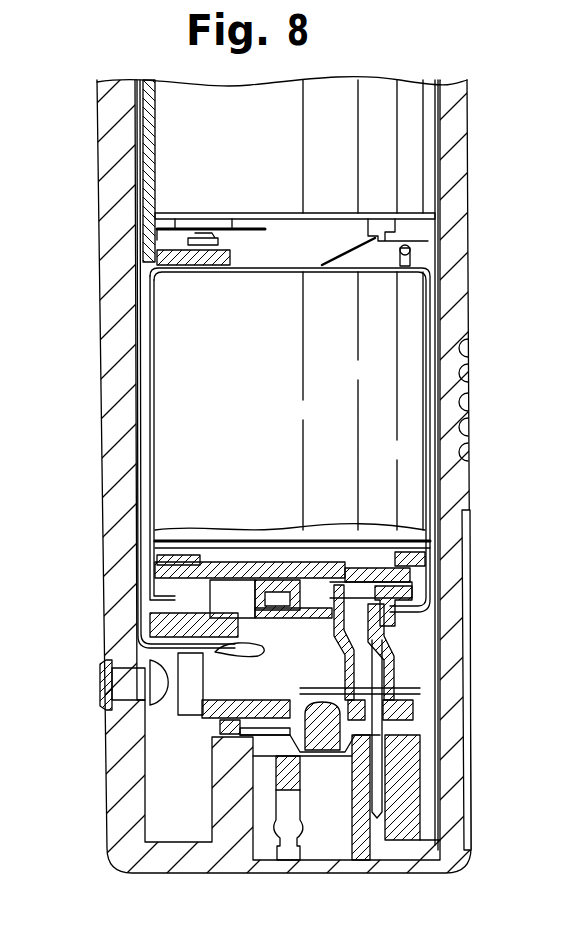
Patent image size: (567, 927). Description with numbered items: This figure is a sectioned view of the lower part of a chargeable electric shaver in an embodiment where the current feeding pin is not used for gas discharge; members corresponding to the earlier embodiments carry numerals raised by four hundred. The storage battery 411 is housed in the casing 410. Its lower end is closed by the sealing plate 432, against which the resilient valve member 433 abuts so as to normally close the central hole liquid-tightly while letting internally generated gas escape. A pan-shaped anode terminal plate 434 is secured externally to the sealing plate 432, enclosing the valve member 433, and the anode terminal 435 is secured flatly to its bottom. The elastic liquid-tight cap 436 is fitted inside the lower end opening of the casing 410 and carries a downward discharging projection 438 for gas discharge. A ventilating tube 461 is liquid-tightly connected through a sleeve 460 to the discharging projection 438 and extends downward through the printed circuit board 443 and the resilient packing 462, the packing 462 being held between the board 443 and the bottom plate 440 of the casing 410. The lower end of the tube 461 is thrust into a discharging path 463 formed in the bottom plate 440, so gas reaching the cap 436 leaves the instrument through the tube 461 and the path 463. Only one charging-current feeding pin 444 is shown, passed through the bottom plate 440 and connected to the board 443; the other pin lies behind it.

The casing 410 is at (462, 303).
The storage battery 411 is at (390, 368).
The sealing plate 432 is at (433, 560).
The resilient valve member 433 is at (290, 570).
The anode terminal plate 434 is at (263, 616).
The anode terminal 435 is at (263, 648).
The liquid-tight cap 436 is at (400, 616).
The discharging projection 438 is at (388, 647).
The bottom plate 440 is at (266, 748).
The printed circuit board 443 is at (232, 706).
The charging-current feeding pin 444 is at (300, 803).
The sleeve 460 is at (388, 690).
The ventilating tube 461 is at (380, 772).
The resilient packing 462 is at (383, 735).
The discharging path 463 is at (378, 832).